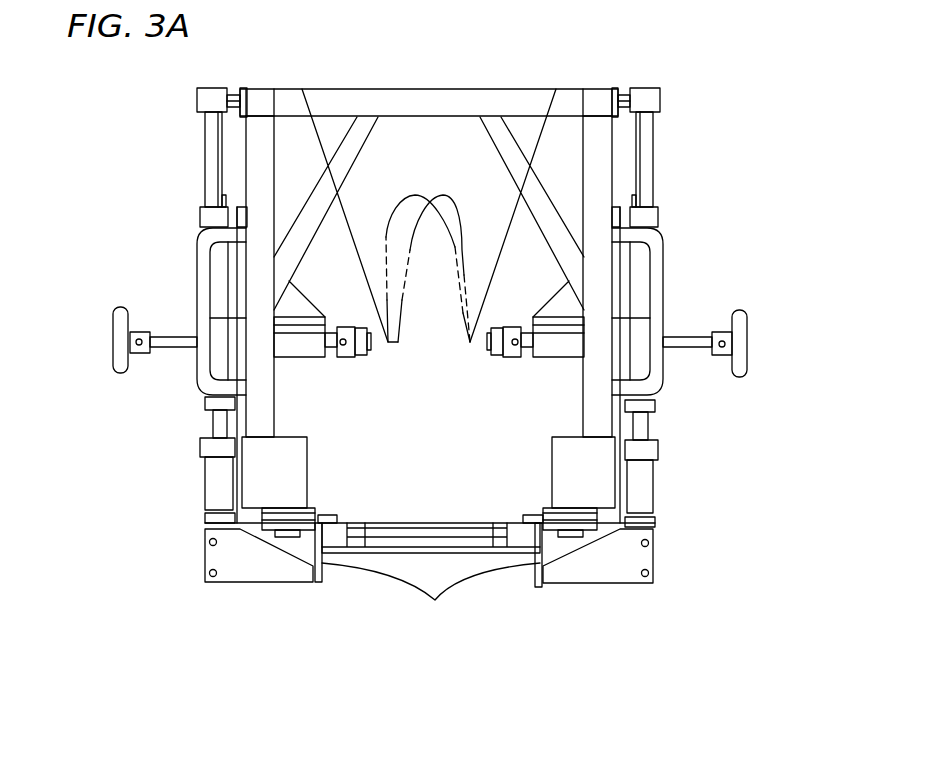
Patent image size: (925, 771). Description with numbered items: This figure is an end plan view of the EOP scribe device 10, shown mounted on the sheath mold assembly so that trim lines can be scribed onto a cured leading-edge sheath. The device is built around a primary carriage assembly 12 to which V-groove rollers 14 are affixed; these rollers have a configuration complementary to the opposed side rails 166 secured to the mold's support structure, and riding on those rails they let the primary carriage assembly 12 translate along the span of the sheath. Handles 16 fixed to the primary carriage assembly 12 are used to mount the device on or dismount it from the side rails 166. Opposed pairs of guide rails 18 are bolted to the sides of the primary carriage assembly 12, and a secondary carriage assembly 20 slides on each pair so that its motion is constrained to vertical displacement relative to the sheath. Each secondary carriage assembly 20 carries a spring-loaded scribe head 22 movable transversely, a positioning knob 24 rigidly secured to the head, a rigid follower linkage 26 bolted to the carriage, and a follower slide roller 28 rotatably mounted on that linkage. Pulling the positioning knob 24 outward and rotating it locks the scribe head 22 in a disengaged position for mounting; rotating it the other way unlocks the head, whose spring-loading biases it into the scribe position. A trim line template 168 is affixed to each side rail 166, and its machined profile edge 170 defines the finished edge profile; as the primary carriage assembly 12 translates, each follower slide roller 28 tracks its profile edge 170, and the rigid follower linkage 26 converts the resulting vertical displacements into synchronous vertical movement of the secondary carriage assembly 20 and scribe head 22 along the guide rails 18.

The EOP scribe device 10 is at (772, 115).
The primary carriage assembly 12 is at (623, 157).
The V-groove rollers 14 is at (255, 523).
The handles 16 is at (190, 262).
The guide rails 18 is at (208, 152).
The secondary carriage assembly 20 is at (175, 372).
The spring-loaded scribe head 22 is at (315, 368).
The positioning knob 24 is at (110, 340).
The rigid follower linkage 26 is at (200, 475).
The follower slide roller 28 is at (320, 583).
The side rails 166 is at (327, 513).
The trim line template 168 is at (430, 574).
The profile edge 170 is at (325, 578).